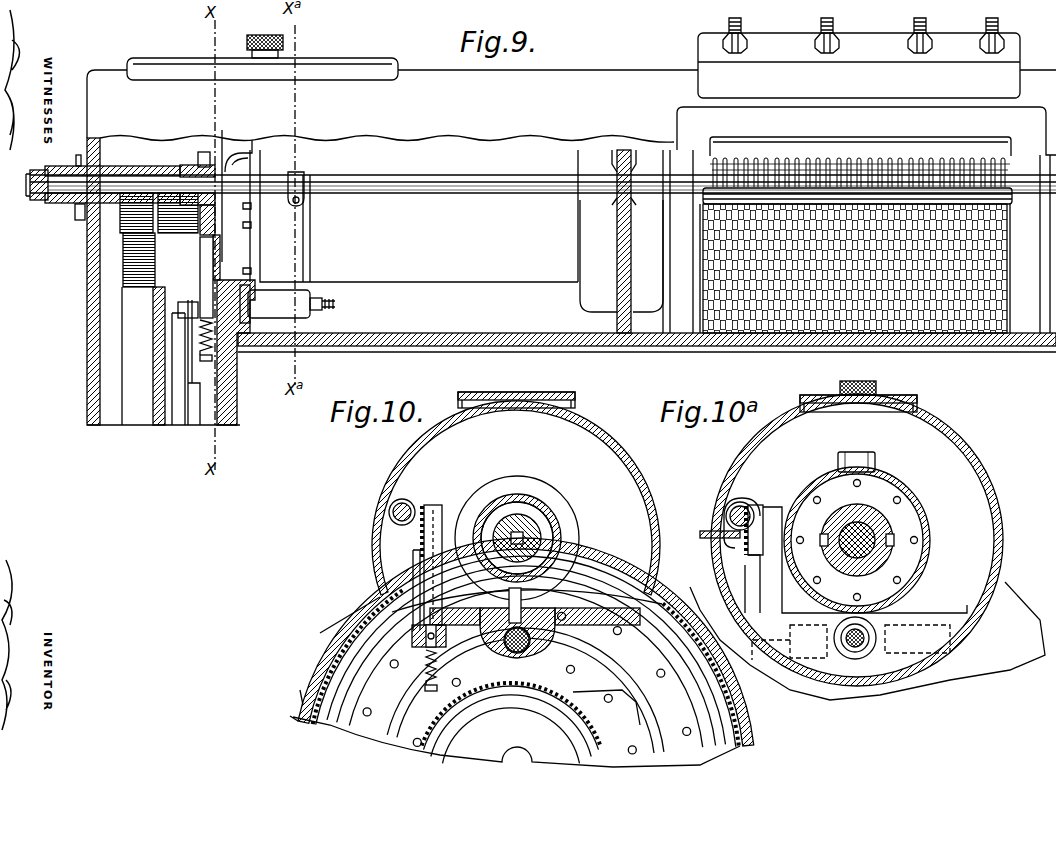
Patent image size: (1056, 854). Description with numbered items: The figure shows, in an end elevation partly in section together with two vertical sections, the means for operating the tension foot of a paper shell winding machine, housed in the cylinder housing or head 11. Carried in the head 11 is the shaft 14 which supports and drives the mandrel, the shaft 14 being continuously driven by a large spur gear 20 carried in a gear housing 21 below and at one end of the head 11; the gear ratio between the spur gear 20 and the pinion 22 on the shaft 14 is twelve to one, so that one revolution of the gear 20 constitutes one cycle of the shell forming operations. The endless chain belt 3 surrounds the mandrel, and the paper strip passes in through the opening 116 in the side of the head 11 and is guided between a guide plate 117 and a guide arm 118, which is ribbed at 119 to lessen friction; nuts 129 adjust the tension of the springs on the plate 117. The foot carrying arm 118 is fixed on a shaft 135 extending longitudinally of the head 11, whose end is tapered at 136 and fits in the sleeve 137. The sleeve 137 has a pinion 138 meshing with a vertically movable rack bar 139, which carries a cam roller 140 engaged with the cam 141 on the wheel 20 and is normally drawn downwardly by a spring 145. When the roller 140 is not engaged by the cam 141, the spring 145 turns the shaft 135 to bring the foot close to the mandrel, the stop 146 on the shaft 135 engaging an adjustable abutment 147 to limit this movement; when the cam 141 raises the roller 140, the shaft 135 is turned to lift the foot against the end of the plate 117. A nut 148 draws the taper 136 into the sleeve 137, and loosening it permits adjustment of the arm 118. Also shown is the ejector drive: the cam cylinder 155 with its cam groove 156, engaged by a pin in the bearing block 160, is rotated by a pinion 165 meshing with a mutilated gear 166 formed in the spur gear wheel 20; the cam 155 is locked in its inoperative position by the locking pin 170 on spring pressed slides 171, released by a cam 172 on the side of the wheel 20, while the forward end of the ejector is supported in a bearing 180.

In FIG. 9, the endless chain belt 3 is at (820, 318).
In FIG. 9, the cylinder housing or head 11 is at (1025, 343).
In FIG. 10, the cylinder housing or head 11 is at (620, 455).
In FIG. 10A, the cylinder housing or head 11 is at (988, 482).
In FIG. 10, the shaft 14 is at (522, 505).
In FIG. 10A, the shaft 14 is at (848, 560).
In FIG. 9, the spur gear 20 is at (150, 425).
In FIG. 10, the spur gear 20 is at (320, 672).
In FIG. 10, the gear housing 21 is at (298, 696).
In FIG. 10A, the gear housing 21 is at (1012, 655).
In FIG. 9, the pinion 22 is at (128, 216).
In FIG. 9, the opening 116 is at (900, 152).
In FIG. 9, the guide plate 117 is at (943, 152).
In FIG. 9, the guide arm 118 is at (803, 180).
In FIG. 9, the ribs 119 is at (854, 178).
In FIG. 9, the nuts 129 is at (748, 35).
In FIG. 9, the shaft 135 is at (525, 196).
In FIG. 10, the shaft 135 is at (389, 512).
In FIG. 10A, the shaft 135 is at (722, 505).
In FIG. 9, the taper 136 is at (195, 178).
In FIG. 9, the sleeve 137 is at (156, 166).
In FIG. 9, the pinion 138 is at (215, 168).
In FIG. 10, the pinion 138 is at (448, 492).
In FIG. 10A, the pinion 138 is at (755, 505).
In FIG. 9, the rack bar 139 is at (222, 200).
In FIG. 10, the rack bar 139 is at (420, 540).
In FIG. 10A, the rack bar 139 is at (755, 545).
In FIG. 9, the cam roller 140 is at (196, 302).
In FIG. 10, the cam roller 140 is at (446, 648).
In FIG. 9, the cam 141 is at (180, 355).
In FIG. 10, the cam 141 is at (368, 697).
In FIG. 9, the spring 145 is at (215, 350).
In FIG. 10, the spring 145 is at (428, 683).
In FIG. 9, the stop 146 is at (302, 202).
In FIG. 10A, the stop 146 is at (725, 538).
In FIG. 9, the adjustable abutment 147 is at (302, 212).
In FIG. 10A, the adjustable abutment 147 is at (705, 530).
In FIG. 9, the nut 148 is at (42, 196).
In FIG. 10, the cam cylinder 155 is at (535, 518).
In FIG. 10A, the cam cylinder 155 is at (878, 558).
In FIG. 10A, the cam groove 156 is at (893, 542).
In FIG. 9, the bearing block 160 is at (252, 150).
In FIG. 9, the pinion 165 is at (157, 260).
In FIG. 10, the mutilated gear 166 is at (648, 600).
In FIG. 10, the locking pin 170 is at (545, 604).
In FIG. 9, the spring pressed slide 171 is at (336, 304).
In FIG. 10, the spring pressed slide 171 is at (502, 655).
In FIG. 10A, the spring pressed slide 171 is at (878, 640).
In FIG. 10, the cam 172 is at (600, 648).
In FIG. 9, the bearing 180 is at (600, 300).